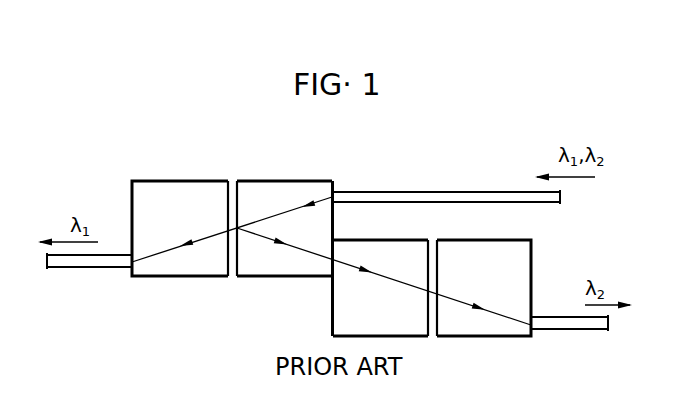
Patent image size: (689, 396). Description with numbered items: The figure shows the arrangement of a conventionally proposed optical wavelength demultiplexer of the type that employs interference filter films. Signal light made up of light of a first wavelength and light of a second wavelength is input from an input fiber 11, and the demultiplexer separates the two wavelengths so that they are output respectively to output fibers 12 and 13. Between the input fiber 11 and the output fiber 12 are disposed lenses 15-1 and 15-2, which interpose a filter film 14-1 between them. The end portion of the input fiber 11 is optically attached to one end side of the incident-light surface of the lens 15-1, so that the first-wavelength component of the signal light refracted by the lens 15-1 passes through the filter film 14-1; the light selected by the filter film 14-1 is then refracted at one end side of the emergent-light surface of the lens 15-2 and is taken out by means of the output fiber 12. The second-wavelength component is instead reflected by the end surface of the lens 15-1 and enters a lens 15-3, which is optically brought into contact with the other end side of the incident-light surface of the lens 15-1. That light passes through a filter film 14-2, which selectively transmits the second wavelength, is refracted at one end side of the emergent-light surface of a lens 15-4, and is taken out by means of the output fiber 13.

The input fiber 11 is at (400, 190).
The output fiber 12 is at (89, 268).
The output fiber 13 is at (568, 330).
The filter film 14-1 is at (233, 190).
The filter film 14-2 is at (435, 248).
The lens 15-1 is at (308, 190).
The lens 15-2 is at (177, 190).
The lens 15-3 is at (399, 250).
The lens 15-4 is at (526, 252).